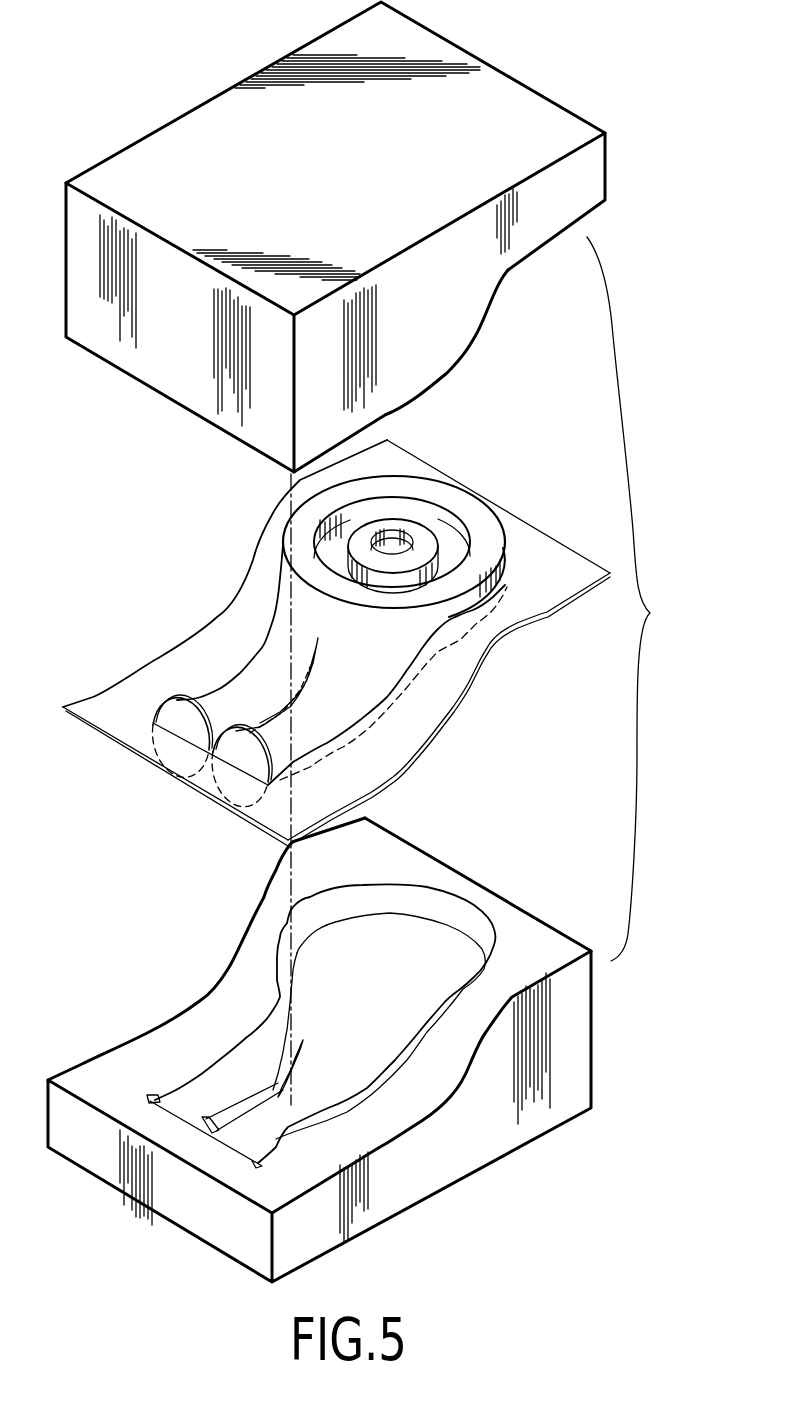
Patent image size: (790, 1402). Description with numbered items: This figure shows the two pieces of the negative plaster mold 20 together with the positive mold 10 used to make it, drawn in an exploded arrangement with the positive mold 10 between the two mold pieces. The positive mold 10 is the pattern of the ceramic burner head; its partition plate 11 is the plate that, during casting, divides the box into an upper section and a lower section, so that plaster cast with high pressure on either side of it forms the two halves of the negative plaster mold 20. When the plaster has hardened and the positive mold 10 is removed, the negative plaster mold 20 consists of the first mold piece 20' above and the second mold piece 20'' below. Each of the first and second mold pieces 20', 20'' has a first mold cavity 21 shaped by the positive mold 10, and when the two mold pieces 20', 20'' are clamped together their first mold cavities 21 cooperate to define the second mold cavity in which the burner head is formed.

The positive mold 10 is at (478, 527).
The partition plate 11 is at (538, 550).
The negative plaster mold 20 is at (636, 599).
The first mold piece 20' is at (367, 237).
The second mold piece 20'' is at (327, 1050).
The first mold cavity 21 is at (429, 941).